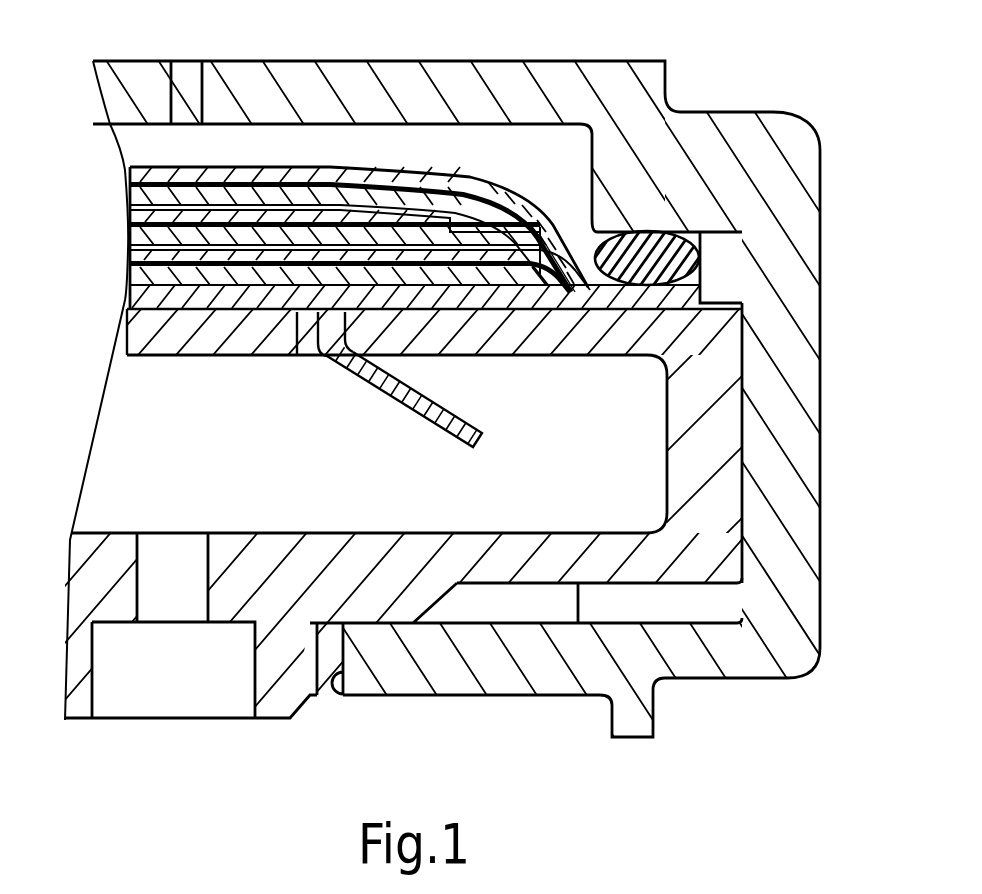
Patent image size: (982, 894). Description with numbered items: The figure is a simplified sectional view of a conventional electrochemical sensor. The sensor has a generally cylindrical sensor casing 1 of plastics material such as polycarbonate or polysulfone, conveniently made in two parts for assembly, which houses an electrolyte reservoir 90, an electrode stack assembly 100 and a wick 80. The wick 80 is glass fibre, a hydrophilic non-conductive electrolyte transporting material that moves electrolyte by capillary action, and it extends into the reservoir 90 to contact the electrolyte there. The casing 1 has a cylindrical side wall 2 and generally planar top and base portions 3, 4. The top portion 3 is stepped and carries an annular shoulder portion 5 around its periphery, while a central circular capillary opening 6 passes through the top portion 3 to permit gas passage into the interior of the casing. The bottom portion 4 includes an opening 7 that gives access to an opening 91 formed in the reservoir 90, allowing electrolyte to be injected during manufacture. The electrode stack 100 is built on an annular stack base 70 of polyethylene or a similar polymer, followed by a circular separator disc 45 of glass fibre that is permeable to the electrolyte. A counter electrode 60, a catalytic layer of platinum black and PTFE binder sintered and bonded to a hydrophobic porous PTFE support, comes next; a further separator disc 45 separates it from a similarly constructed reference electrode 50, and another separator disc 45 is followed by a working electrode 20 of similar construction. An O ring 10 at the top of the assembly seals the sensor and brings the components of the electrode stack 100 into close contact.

The sensor casing 1 is at (747, 693).
The cylindrical side wall 2 is at (820, 465).
The top portion 3 is at (452, 70).
The base portion 4 is at (468, 695).
The annular shoulder portion 5 is at (580, 212).
The capillary opening 6 is at (203, 78).
The opening 7 is at (340, 685).
The O ring 10 is at (660, 258).
The working electrode 20 is at (157, 172).
The separator disc 45 is at (124, 335).
The reference electrode 50 is at (128, 212).
The counter electrode 60 is at (150, 250).
The stack base 70 is at (543, 300).
The wick 80 is at (457, 448).
The electrolyte reservoir 90 is at (540, 506).
The opening 91 is at (178, 600).
The electrode stack assembly 100 is at (126, 236).